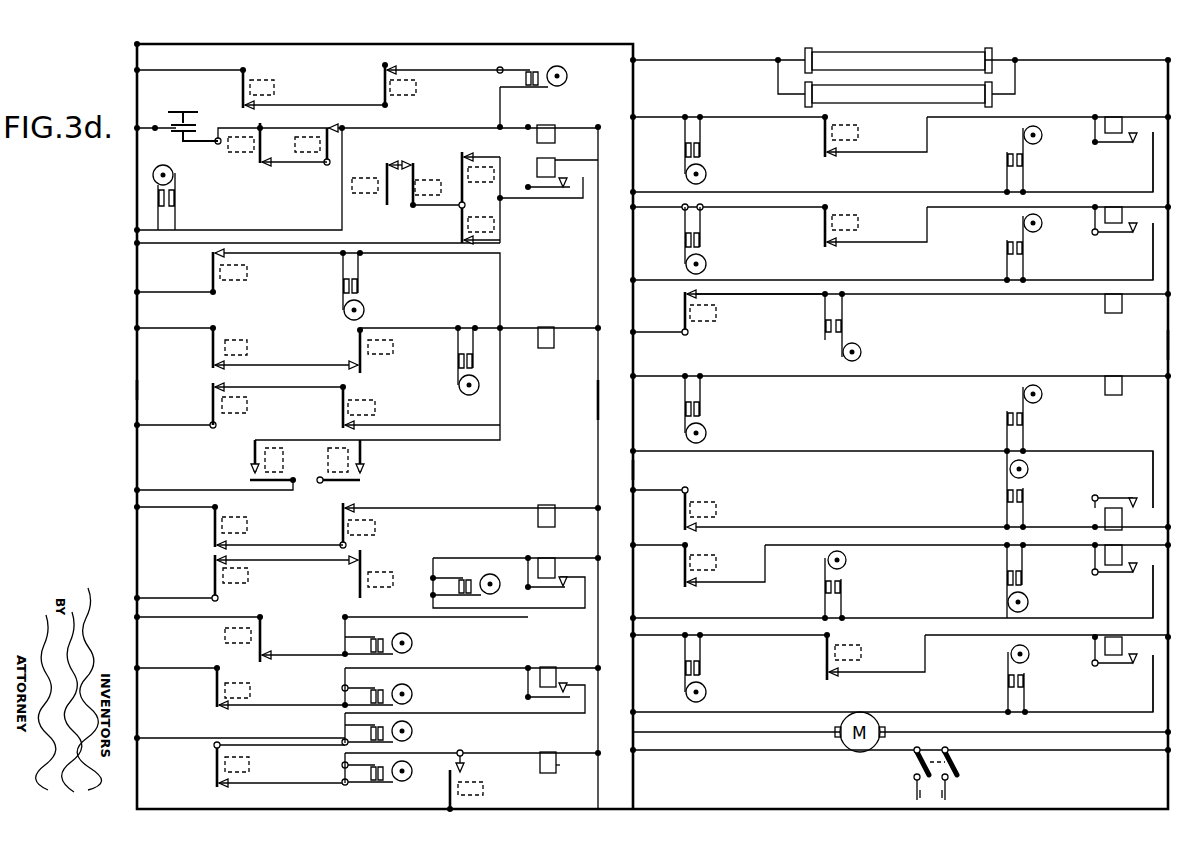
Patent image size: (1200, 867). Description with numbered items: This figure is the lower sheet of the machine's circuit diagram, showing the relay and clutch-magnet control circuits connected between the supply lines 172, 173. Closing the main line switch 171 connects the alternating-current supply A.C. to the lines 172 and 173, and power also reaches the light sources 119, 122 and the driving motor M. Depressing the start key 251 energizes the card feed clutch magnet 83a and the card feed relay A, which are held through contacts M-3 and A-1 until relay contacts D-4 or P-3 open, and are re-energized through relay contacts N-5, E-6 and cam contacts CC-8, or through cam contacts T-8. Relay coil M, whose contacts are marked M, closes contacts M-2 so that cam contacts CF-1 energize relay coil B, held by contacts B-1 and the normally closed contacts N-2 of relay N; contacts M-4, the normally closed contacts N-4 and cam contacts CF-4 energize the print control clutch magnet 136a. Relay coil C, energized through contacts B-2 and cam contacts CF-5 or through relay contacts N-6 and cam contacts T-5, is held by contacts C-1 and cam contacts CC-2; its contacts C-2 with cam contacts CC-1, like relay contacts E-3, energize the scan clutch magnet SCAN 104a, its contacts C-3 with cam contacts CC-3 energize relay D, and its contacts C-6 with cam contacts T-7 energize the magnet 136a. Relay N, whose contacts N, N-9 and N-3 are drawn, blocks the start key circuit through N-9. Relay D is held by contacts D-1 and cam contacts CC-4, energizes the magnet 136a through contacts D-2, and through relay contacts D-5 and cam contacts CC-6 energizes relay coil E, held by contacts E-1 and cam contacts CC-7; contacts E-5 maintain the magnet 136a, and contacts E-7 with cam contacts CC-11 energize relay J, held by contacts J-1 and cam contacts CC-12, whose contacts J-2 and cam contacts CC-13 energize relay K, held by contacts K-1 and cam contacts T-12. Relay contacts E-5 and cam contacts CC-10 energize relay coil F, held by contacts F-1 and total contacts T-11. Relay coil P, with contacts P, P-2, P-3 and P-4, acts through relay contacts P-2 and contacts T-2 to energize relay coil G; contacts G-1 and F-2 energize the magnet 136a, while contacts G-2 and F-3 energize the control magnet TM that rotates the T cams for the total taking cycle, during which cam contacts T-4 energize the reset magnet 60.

The relay contacts N-5 is at (241, 106).
The relay coil N is at (262, 79).
The relay coil P is at (250, 136).
The relay contacts N-9 is at (331, 127).
The start key 251 is at (180, 140).
The P relay contact P-4 is at (266, 165).
The relay contacts P-3 is at (387, 162).
The relay contacts D-4 is at (413, 162).
The relay D is at (430, 196).
The relay contacts M-3 is at (462, 150).
The N relay contact N-3 is at (460, 240).
The relay coil M is at (481, 182).
The cam contacts T-8 is at (176, 207).
The relay contacts E-6 is at (392, 69).
The relay coil E is at (418, 89).
The cam contacts CC-8 is at (520, 70).
The card feed clutch magnet 83a is at (550, 135).
The card feed relay A is at (548, 167).
The relay contacts A-1 is at (568, 187).
The relay contacts C-6 is at (213, 253).
The relay coil C is at (248, 274).
The cam contacts T-7 is at (358, 280).
The relay contacts M-4 is at (211, 364).
The relay contacts N-4 is at (356, 364).
The cam contacts CF-4 is at (458, 355).
The print control clutch magnet 136a is at (548, 330).
The relay contacts G-1 is at (222, 387).
The supply line 172 is at (137, 388).
The relay contacts F-2 is at (340, 420).
The relay coil F is at (377, 408).
The relay coil G is at (240, 414).
The relay contacts E-5 is at (250, 476).
The relay contacts D-2 is at (365, 475).
The supply line 173 is at (598, 395).
The relay contacts F-3 is at (350, 508).
The relay contacts G-2 is at (213, 543).
The relay contacts M-2 is at (215, 560).
The relay contacts N-2 is at (362, 560).
The cam contacts CF-1 is at (450, 578).
The relay coil B is at (250, 683).
The relay contacts B-1 is at (570, 580).
The control magnet TM is at (548, 505).
The relay contacts N-6 is at (258, 655).
The cam contacts T-5 is at (355, 635).
The relay contacts B-2 is at (215, 705).
The cam contacts CF-5 is at (345, 695).
The cam contacts CC-2 is at (345, 738).
The relay contacts C-2 is at (215, 782).
The cam contacts CC-1 is at (348, 788).
The relay contacts C-1 is at (572, 688).
The relay contacts E-3 is at (458, 760).
The scan switch SCAN is at (546, 754).
The scan clutch magnet 104a is at (557, 773).
The light source 119 is at (980, 52).
The light source 122 is at (970, 105).
The cam contacts CC-3 is at (700, 143).
The relay contacts C-3 is at (825, 152).
The cam contacts CC-4 is at (1007, 172).
The relay contacts D-1 is at (1138, 140).
The relay contacts E-1 is at (1138, 232).
The cam contacts CC-6 is at (700, 233).
The relay contacts D-5 is at (826, 248).
The cam contacts CC-7 is at (1007, 263).
The relay contacts P-2 is at (688, 292).
The cam contacts T-2 is at (845, 320).
The cam contacts T-4 is at (703, 400).
The reset magnet 60 is at (1105, 385).
The total contacts T-11 is at (1007, 435).
The relay contacts F-1 is at (1138, 503).
The cam contacts CC-10 is at (1007, 520).
The relay contacts E-7 is at (688, 587).
The cam contacts CC-12 is at (842, 592).
The cam contacts CC-11 is at (1007, 570).
The relay J is at (862, 648).
The relay contacts J-1 is at (1138, 575).
The cam contacts CC-13 is at (703, 663).
The relay contacts J-2 is at (832, 678).
The cam contacts T-12 is at (1008, 695).
The relay K is at (1105, 652).
The relay contacts K-1 is at (1138, 668).
The main line switch 171 is at (960, 768).
The AC supply A.C. is at (931, 798).